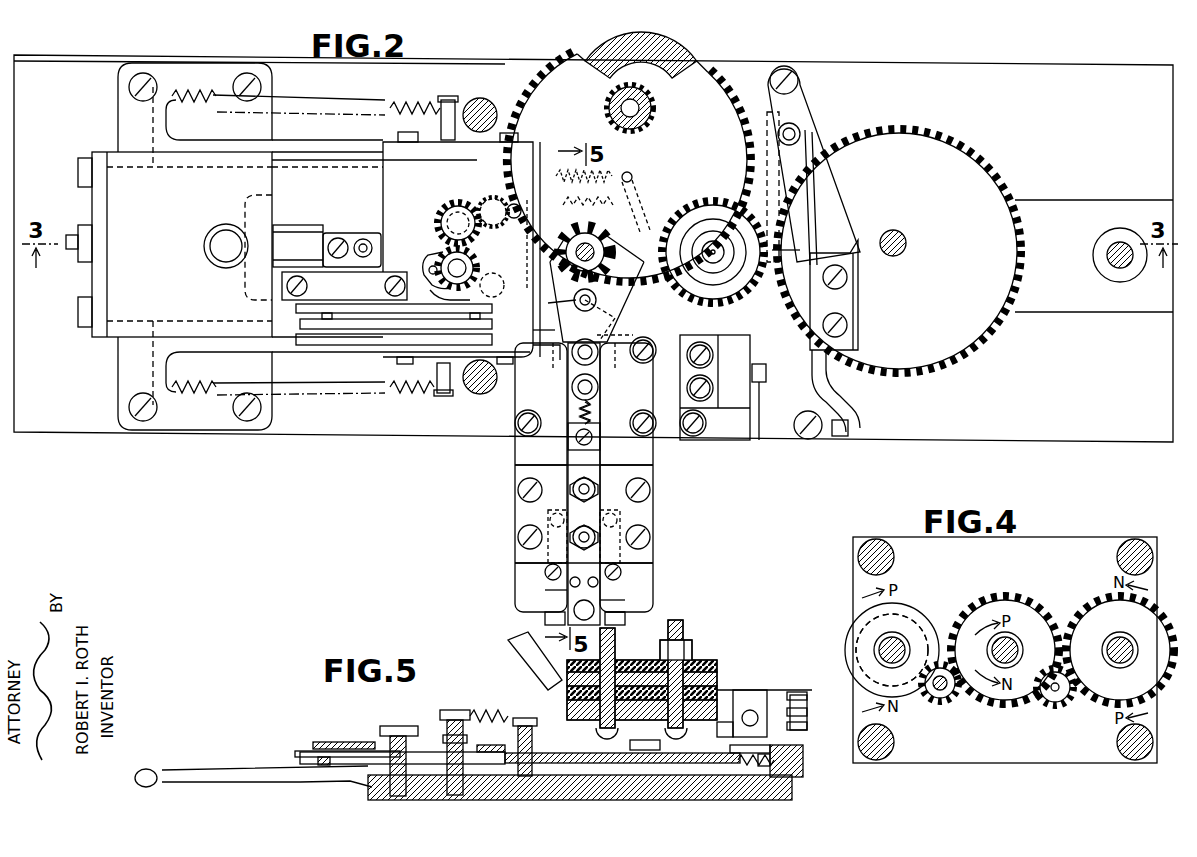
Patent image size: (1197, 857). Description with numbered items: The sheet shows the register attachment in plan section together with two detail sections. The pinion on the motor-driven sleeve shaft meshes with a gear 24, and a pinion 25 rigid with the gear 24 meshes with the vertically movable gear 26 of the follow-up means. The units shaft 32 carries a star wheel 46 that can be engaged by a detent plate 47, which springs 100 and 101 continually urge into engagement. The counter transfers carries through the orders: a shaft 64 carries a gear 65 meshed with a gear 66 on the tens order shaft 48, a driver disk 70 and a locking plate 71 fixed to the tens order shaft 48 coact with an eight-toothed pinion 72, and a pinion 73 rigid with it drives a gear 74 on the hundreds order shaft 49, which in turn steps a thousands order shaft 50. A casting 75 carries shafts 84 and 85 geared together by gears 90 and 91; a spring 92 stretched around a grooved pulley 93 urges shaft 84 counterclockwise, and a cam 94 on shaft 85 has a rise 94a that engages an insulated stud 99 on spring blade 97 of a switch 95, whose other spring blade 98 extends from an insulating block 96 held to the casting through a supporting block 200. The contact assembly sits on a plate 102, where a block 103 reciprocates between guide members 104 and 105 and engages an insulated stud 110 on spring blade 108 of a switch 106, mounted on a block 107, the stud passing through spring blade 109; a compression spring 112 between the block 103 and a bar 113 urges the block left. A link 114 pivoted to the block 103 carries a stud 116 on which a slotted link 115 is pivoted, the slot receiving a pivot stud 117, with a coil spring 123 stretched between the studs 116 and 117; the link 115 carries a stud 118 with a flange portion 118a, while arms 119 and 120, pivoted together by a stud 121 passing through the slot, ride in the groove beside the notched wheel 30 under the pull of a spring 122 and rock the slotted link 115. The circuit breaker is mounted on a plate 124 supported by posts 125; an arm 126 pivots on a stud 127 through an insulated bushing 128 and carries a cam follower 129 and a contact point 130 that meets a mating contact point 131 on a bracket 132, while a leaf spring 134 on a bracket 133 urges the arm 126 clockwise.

In FIG. 2, the gear 24 is at (516, 74).
In FIG. 2, the pinion 25 is at (657, 110).
In FIG. 2, the gear 26 is at (680, 66).
In FIG. 2, the notched wheel 30 is at (616, 211).
In FIG. 2, the shaft 32 is at (712, 253).
In FIG. 2, the star wheel 46 is at (630, 182).
In FIG. 2, the detent plate 47 is at (540, 150).
In FIG. 4, the tens order shaft 48 is at (880, 656).
In FIG. 4, the hundreds order shaft 49 is at (1010, 645).
In FIG. 4, the thousands order shaft 50 is at (1118, 644).
In FIG. 2, the shaft 64 is at (709, 262).
In FIG. 2, the gear 65 is at (707, 302).
In FIG. 2, the gear 66 is at (918, 362).
In FIG. 4, the driver disk 70 is at (870, 684).
In FIG. 4, the locking plate 71 is at (846, 643).
In FIG. 4, the pinion 72 is at (934, 700).
In FIG. 4, the pinion 73 is at (952, 700).
In FIG. 4, the gear 74 is at (996, 700).
In FIG. 2, the casting 75 is at (125, 110).
In FIG. 2, the shaft 84 is at (464, 205).
In FIG. 2, the shaft 85 is at (470, 268).
In FIG. 2, the gear 90 is at (490, 200).
In FIG. 2, the gear 91 is at (498, 294).
In FIG. 2, the spring 92 is at (526, 228).
In FIG. 2, the grooved pulley 93 is at (437, 216).
In FIG. 2, the cam 94 is at (430, 237).
In FIG. 2, the rise 94a is at (430, 244).
In FIG. 2, the switch 95 is at (548, 331).
In FIG. 2, the insulating block 96 is at (300, 320).
In FIG. 2, the spring blade 97 is at (435, 276).
In FIG. 2, the spring blade 98 is at (480, 350).
In FIG. 2, the insulated stud 99 is at (430, 267).
In FIG. 2, the spring 100 is at (213, 93).
In FIG. 2, the spring 101 is at (180, 392).
In FIG. 2, the plate 102 is at (648, 588).
In FIG. 5, the plate 102 is at (720, 798).
In FIG. 5, the block 103 is at (771, 748).
In FIG. 2, the guide member 104 is at (625, 600).
In FIG. 2, the guide member 105 is at (547, 588).
In FIG. 5, the switch 106 is at (808, 710).
In FIG. 2, the block 107 is at (648, 513).
In FIG. 5, the block 107 is at (718, 680).
In FIG. 5, the spring blade 108 is at (785, 690).
In FIG. 5, the spring blade 109 is at (790, 732).
In FIG. 5, the insulated stud 110 is at (740, 690).
In FIG. 5, the compression spring 112 is at (800, 780).
In FIG. 2, the bar 113 is at (626, 618).
In FIG. 5, the bar 113 is at (790, 770).
In FIG. 5, the link 114 is at (648, 764).
In FIG. 2, the slotted link 115 is at (570, 378).
In FIG. 5, the slotted link 115 is at (432, 740).
In FIG. 5, the stud 116 is at (535, 722).
In FIG. 2, the pivot stud 117 is at (608, 422).
In FIG. 5, the pivot stud 117 is at (455, 708).
In FIG. 2, the stud 118 is at (600, 317).
In FIG. 5, the stud 118 is at (316, 760).
In FIG. 2, the flange portion 118a is at (620, 335).
In FIG. 5, the flange portion 118a is at (313, 744).
In FIG. 2, the arm 119 is at (630, 300).
In FIG. 5, the arm 119 is at (205, 777).
In FIG. 2, the arm 120 is at (548, 304).
In FIG. 2, the stud 121 is at (600, 372).
In FIG. 5, the stud 121 is at (388, 728).
In FIG. 2, the spring 122 is at (607, 176).
In FIG. 5, the spring 122 is at (152, 772).
In FIG. 2, the coil spring 123 is at (568, 425).
In FIG. 5, the coil spring 123 is at (505, 712).
In FIG. 2, the plate 124 is at (826, 192).
In FIG. 2, the post 125 is at (800, 80).
In FIG. 2, the arm 126 is at (795, 186).
In FIG. 2, the stud 127 is at (800, 128).
In FIG. 2, the insulated bushing 128 is at (808, 137).
In FIG. 2, the cam follower 129 is at (772, 250).
In FIG. 2, the contact point 130 is at (762, 383).
In FIG. 2, the contact point 131 is at (761, 400).
In FIG. 2, the bracket 132 is at (738, 408).
In FIG. 2, the bracket 133 is at (836, 302).
In FIG. 2, the leaf spring 134 is at (812, 250).
In FIG. 2, the supporting block 200 is at (282, 286).